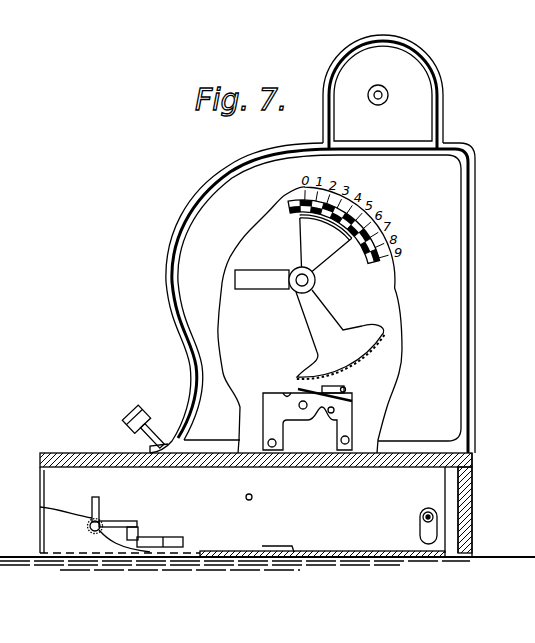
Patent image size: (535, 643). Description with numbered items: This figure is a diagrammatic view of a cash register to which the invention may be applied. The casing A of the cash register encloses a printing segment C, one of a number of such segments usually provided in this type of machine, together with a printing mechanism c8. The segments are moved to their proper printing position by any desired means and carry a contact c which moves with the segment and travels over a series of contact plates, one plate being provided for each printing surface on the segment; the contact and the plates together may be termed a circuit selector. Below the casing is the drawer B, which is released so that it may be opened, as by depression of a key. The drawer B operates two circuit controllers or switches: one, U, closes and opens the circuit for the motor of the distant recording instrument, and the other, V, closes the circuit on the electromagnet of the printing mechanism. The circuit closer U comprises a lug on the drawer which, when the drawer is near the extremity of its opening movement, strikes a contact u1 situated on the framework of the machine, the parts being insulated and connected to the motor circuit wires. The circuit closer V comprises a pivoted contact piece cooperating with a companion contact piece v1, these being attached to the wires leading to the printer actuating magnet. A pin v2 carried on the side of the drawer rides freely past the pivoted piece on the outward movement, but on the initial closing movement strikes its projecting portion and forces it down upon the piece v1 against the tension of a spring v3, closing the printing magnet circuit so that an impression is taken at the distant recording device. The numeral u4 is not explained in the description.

The casing A is at (298, 244).
The drawer B is at (256, 505).
The printing segment C is at (310, 323).
The circuit controller U is at (267, 547).
The circuit controller V is at (102, 524).
The contact c is at (297, 214).
The printing mechanism c8 is at (303, 390).
The contact u1 is at (420, 529).
The hook u4 is at (265, 546).
The contact piece v1 is at (152, 548).
The pin v2 is at (252, 496).
The spring v3 is at (93, 536).